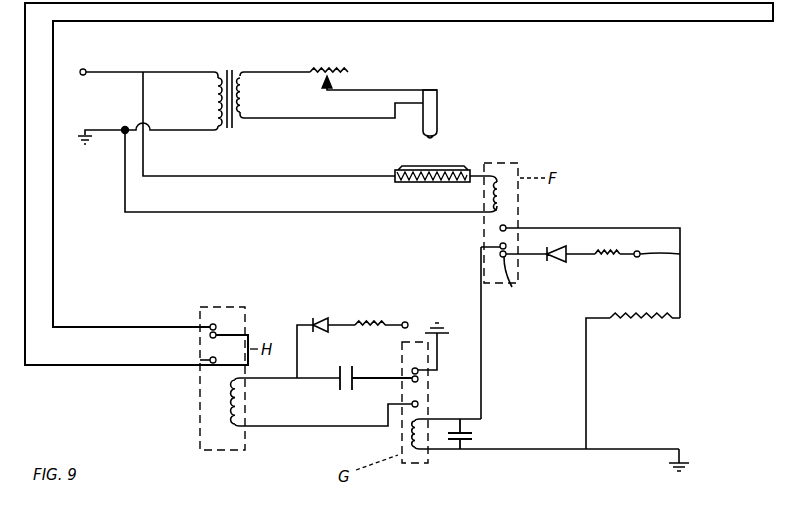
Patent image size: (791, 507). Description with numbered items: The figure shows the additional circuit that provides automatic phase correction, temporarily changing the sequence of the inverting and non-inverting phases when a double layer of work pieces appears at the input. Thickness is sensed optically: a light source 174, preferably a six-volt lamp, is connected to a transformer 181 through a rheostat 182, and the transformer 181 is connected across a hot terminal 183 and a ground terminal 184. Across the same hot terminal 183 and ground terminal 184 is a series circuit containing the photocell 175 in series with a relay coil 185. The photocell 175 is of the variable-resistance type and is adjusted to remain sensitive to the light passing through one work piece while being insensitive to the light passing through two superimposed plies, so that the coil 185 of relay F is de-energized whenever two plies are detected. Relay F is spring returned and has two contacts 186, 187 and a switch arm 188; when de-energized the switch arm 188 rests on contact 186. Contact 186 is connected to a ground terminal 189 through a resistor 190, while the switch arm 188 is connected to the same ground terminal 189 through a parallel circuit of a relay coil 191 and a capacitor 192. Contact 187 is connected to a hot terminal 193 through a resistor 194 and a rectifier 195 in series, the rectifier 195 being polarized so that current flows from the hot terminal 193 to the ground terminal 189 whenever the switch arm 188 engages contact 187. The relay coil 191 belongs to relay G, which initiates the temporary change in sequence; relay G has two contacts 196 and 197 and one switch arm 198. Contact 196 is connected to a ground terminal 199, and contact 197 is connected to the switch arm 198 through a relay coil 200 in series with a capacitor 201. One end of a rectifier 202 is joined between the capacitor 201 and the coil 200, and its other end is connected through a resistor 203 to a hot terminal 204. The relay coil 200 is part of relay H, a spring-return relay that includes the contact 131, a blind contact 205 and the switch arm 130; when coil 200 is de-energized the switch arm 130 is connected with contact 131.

The switch arm 130 is at (230, 330).
The contact 131 is at (228, 292).
The light source 174 is at (439, 113).
The photocell 175 is at (450, 165).
The transformer 181 is at (229, 68).
The rheostat 182 is at (331, 70).
The hot terminal 183 is at (85, 68).
The ground terminal 184 is at (83, 150).
The relay coil 185 is at (492, 200).
The contact 186 is at (507, 225).
The contact 187 is at (514, 284).
The switch arm 188 is at (499, 246).
The ground terminal 189 is at (674, 480).
The resistor 190 is at (646, 323).
The relay coil 191 is at (405, 441).
The capacitor 192 is at (462, 456).
The hot terminal 193 is at (675, 255).
The resistor 194 is at (614, 261).
The rectifier 195 is at (557, 263).
The contact 196 is at (418, 371).
The contact 197 is at (420, 404).
The switch arm 198 is at (390, 366).
The ground terminal 199 is at (443, 327).
The relay coil 200 is at (228, 410).
The capacitor 201 is at (346, 358).
The rectifier 202 is at (320, 318).
The resistor 203 is at (372, 320).
The hot terminal 204 is at (412, 318).
The blind contact 205 is at (210, 366).